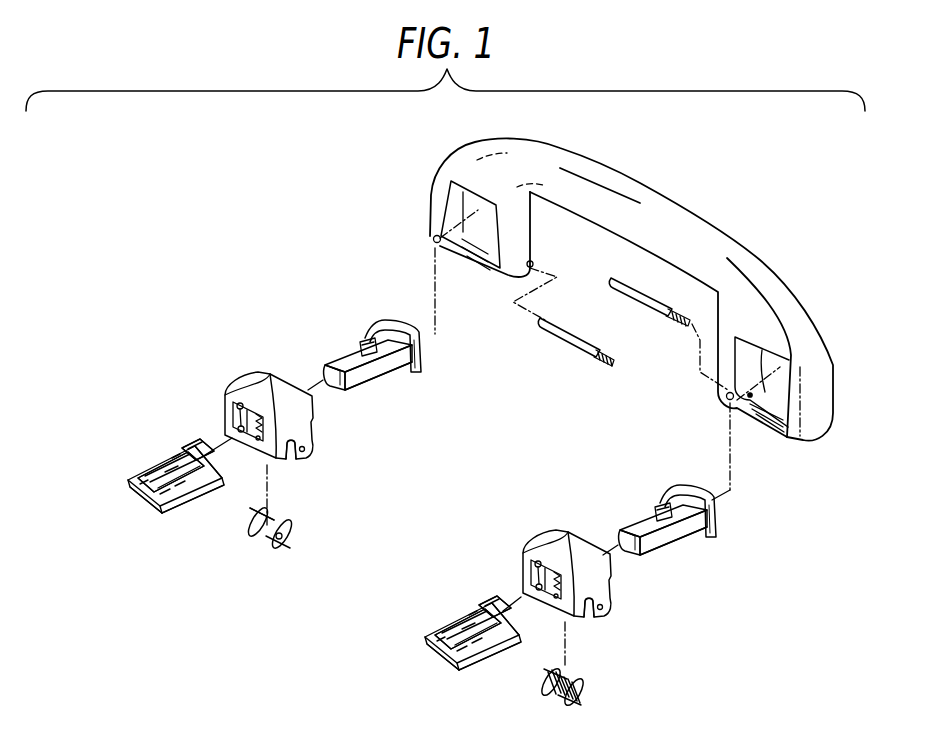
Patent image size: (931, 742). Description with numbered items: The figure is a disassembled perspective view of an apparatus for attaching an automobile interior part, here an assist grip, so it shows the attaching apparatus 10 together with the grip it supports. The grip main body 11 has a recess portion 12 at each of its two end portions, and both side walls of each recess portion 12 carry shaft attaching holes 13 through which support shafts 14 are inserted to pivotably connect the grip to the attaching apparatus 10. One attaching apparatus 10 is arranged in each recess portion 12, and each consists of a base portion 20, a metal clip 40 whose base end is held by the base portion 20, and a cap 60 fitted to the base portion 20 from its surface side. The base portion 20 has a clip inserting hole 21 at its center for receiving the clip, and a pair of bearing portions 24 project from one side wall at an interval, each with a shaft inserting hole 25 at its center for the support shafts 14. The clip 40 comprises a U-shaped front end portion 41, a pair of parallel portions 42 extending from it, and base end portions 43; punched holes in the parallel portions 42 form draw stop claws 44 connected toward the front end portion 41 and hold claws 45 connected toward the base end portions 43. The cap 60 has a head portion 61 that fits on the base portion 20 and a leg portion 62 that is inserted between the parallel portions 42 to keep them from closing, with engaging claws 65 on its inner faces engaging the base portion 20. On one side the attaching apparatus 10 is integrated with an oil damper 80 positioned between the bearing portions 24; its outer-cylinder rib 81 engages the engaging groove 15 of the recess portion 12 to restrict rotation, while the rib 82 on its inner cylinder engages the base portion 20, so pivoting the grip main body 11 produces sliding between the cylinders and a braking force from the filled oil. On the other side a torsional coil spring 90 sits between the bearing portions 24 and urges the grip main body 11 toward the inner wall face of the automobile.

The attaching apparatus 10 is at (233, 265).
The grip main body 11 is at (680, 204).
The recess portion 12 is at (475, 206).
The shaft attaching hole 13 is at (434, 239).
The support shaft 14 is at (575, 347).
The engaging groove 15 is at (467, 262).
The base portion 20 is at (240, 383).
The clip inserting hole 21 is at (240, 416).
The bearing portion 24 is at (312, 437).
The shaft inserting hole 25 is at (306, 452).
The clip 40 is at (110, 477).
The front end portion 41 is at (133, 495).
The parallel portion 42 is at (185, 452).
The base end portion 43 is at (215, 478).
The draw stop claw 44 is at (148, 462).
The hold claw 45 is at (175, 495).
The cap 60 is at (365, 310).
The head portion 61 is at (423, 370).
The leg portion 62 is at (388, 382).
The engaging claw 65 is at (368, 350).
The oil damper 80 is at (312, 520).
The rib 81 is at (268, 522).
The rib 82 is at (290, 538).
The torsional coil spring 90 is at (598, 678).